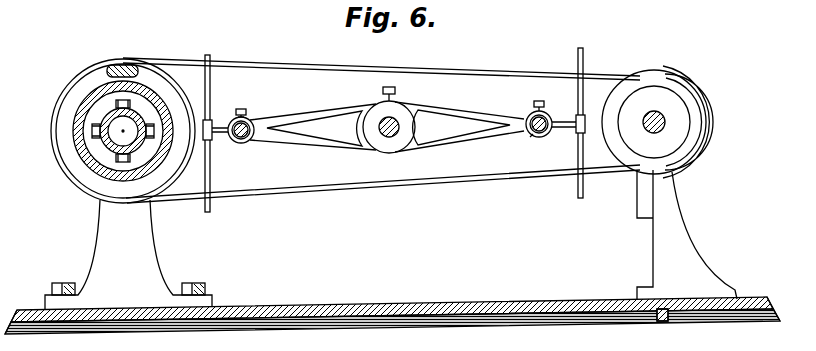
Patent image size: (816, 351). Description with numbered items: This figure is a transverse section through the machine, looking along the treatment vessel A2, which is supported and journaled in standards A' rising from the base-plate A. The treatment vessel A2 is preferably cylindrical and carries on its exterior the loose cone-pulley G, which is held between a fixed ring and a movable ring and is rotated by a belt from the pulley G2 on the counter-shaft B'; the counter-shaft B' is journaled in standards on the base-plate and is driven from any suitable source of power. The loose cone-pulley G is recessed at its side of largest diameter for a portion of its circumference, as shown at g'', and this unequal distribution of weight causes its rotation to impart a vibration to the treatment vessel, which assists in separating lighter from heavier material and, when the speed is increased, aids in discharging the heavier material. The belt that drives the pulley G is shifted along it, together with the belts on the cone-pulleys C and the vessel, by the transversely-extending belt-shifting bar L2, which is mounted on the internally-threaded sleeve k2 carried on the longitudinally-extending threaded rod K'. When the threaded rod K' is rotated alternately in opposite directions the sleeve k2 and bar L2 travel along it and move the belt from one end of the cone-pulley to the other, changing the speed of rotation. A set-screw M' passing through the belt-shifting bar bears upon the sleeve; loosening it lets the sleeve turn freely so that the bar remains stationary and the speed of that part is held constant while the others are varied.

The base-plate A is at (392, 304).
The standards A' is at (128, 254).
The treatment vessel A2 is at (160, 96).
The cone-pulley C is at (103, 122).
The loose cone-pulley G is at (55, 134).
The pulley G2 is at (708, 110).
The lugs on hub d is at (123, 131).
The recess g'' is at (127, 54).
The set-screw M' is at (365, 90).
The belt-shifting bar L2 is at (448, 100).
The internally-threaded sleeve k2 is at (372, 124).
The threaded rod K' is at (372, 143).
The counter-shaft B' is at (652, 111).